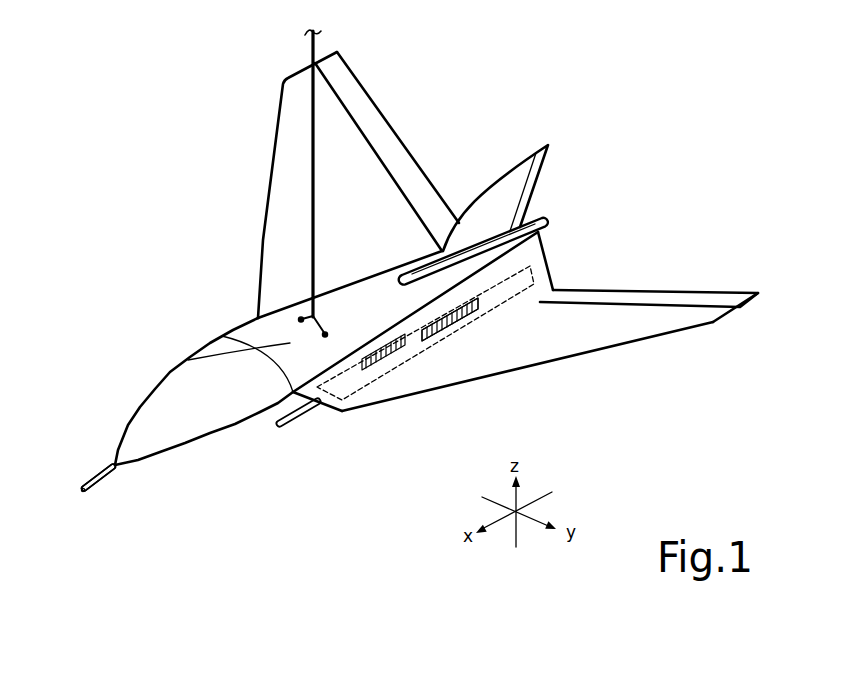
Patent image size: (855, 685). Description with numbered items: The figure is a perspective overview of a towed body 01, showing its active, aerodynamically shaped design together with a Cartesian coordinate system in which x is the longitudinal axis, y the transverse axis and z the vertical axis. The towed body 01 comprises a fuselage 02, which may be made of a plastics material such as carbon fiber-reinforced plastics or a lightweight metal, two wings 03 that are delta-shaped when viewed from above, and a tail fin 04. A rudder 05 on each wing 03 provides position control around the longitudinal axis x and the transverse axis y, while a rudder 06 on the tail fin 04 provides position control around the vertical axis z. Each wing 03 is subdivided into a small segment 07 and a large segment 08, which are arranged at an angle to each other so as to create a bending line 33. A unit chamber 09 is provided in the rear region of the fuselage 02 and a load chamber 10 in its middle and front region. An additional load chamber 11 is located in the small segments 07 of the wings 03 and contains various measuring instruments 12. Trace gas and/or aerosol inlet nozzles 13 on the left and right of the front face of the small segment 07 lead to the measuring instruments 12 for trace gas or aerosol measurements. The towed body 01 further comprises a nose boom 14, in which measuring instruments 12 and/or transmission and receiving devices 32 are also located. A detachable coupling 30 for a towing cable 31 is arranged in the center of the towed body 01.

The towed body 01 is at (108, 152).
The fuselage 02 is at (215, 437).
The wing 03 is at (287, 162).
The tail fin 04 is at (507, 190).
The rudder 05 is at (377, 132).
The rudder 06 is at (532, 173).
The small segment 07 is at (333, 403).
The large segment 08 is at (467, 363).
The unit chamber 09 is at (507, 248).
The load chamber 10 is at (223, 372).
The additional load chamber 11 is at (497, 293).
The measuring instruments 12 is at (430, 340).
The inlet nozzle 13 is at (307, 420).
The nose boom 14 is at (110, 478).
The detachable coupling 30 is at (295, 321).
The towing cable 31 is at (313, 45).
The transmission and receiving devices 32 is at (99, 477).
The bending line 33 is at (433, 350).